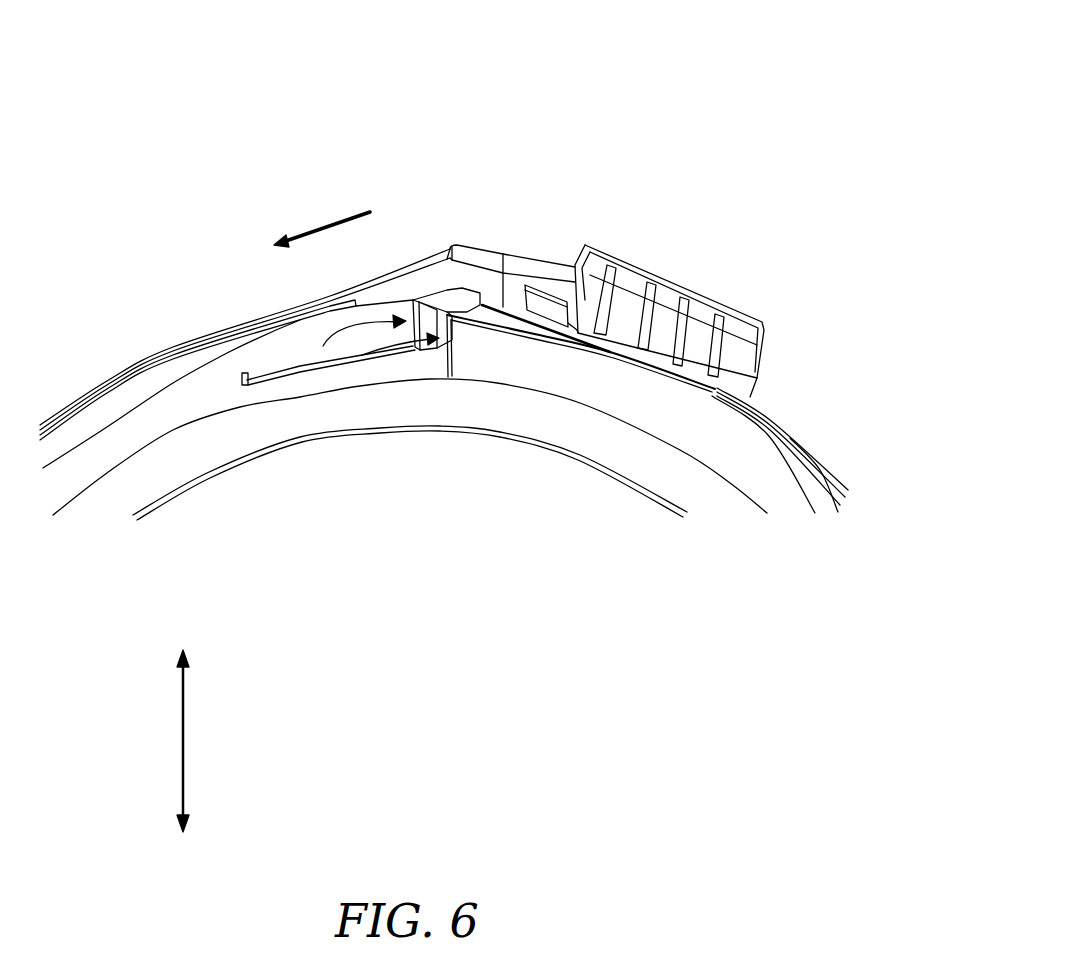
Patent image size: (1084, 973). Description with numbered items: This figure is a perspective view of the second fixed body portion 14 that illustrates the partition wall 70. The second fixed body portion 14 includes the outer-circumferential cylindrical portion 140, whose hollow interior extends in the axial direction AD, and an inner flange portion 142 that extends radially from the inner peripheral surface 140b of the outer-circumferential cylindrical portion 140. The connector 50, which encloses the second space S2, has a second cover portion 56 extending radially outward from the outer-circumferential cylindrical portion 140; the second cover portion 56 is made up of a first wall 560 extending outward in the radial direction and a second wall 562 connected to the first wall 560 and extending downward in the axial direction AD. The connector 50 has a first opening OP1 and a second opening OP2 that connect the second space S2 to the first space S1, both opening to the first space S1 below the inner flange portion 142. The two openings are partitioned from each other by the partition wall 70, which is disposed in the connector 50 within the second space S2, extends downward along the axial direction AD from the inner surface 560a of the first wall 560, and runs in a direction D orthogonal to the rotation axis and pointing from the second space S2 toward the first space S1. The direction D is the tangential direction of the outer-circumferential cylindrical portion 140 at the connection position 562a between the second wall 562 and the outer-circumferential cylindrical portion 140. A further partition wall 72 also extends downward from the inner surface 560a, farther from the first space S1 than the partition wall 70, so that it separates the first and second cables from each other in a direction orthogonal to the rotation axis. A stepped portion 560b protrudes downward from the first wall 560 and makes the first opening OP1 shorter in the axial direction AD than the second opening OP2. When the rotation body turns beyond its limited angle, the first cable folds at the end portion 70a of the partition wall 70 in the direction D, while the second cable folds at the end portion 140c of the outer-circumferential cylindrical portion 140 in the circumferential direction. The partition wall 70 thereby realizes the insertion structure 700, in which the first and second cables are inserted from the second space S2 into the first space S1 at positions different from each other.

The second fixed body portion 14 is at (798, 73).
The insertion structure 700 is at (441, 125).
The partition wall 70 is at (437, 300).
The end portion 70a is at (413, 304).
The partition wall 72 is at (552, 287).
The connector 50 is at (615, 216).
The second cover portion 56 is at (747, 198).
The second wall 562 is at (633, 267).
The first wall 560 is at (657, 357).
The inner surface 560a is at (442, 367).
The stepped portion 560b is at (398, 350).
The connection position 562a is at (243, 345).
The outer-circumferential cylindrical portion 140 is at (193, 338).
The inner peripheral surface 140b is at (660, 420).
The end portion 140c is at (449, 343).
The inner flange portion 142 is at (170, 472).
The first space S1 is at (218, 456).
The second space S2 is at (697, 287).
The first opening OP1 is at (320, 350).
The second opening OP2 is at (377, 349).
The direction D is at (318, 232).
The axial direction AD is at (183, 750).